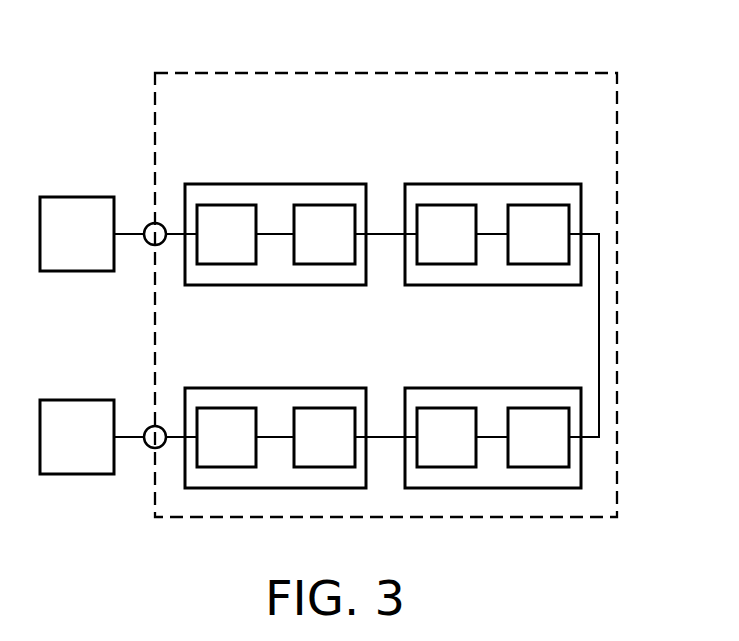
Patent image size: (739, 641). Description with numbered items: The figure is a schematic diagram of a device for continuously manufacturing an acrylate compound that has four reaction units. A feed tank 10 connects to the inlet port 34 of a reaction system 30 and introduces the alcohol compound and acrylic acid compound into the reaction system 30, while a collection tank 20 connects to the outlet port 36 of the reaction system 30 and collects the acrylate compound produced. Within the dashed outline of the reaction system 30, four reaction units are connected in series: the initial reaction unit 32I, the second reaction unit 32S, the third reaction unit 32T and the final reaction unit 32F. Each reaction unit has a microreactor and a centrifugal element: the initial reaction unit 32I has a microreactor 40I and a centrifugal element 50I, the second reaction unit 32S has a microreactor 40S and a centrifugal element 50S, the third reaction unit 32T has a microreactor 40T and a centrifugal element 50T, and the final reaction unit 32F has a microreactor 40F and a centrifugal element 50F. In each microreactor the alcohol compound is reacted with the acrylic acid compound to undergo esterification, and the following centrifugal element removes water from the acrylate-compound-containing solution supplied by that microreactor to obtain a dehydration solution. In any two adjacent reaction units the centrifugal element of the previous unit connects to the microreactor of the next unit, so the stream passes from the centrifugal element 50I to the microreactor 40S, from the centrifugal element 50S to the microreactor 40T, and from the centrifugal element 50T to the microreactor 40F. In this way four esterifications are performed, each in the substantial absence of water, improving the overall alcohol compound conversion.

The feed tank 10 is at (77, 197).
The collection tank 20 is at (77, 400).
The reaction system 30 is at (385, 73).
The inlet port 34 is at (149, 245).
The outlet port 36 is at (149, 448).
The initial reaction unit 32I is at (274, 184).
The second reaction unit 32S is at (491, 184).
The final reaction unit 32F is at (274, 388).
The third reaction unit 32T is at (491, 388).
The microreactor 40I is at (226, 205).
The centrifugal element 50I is at (323, 205).
The microreactor 40S is at (445, 205).
The centrifugal element 50S is at (537, 205).
The microreactor 40F is at (226, 408).
The centrifugal element 50F is at (323, 408).
The microreactor 40T is at (445, 408).
The centrifugal element 50T is at (537, 408).